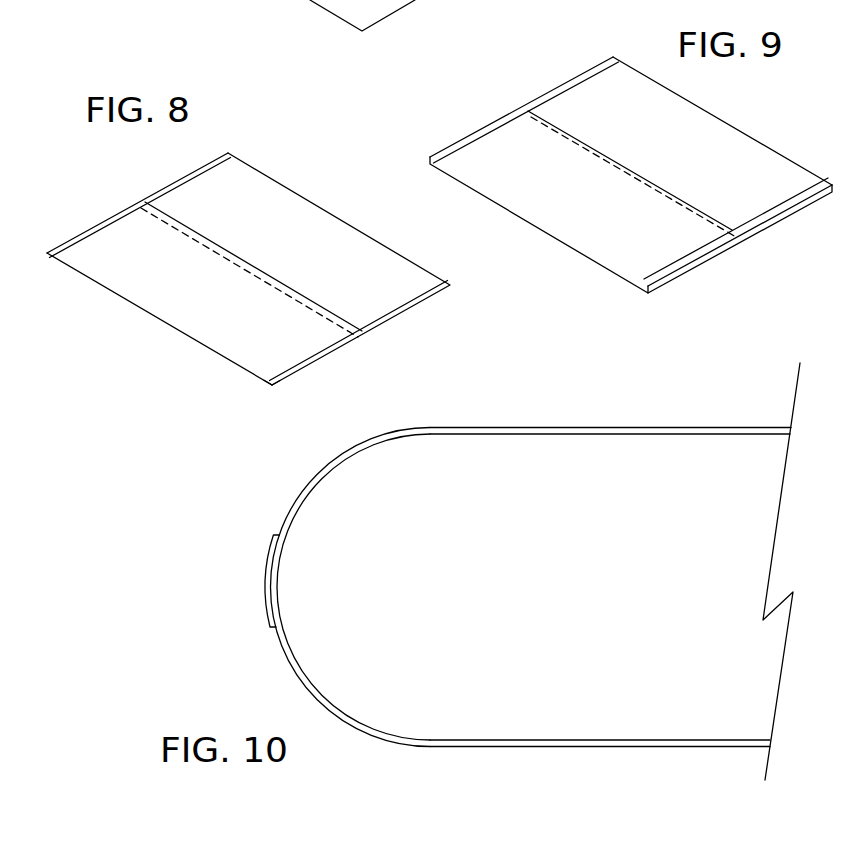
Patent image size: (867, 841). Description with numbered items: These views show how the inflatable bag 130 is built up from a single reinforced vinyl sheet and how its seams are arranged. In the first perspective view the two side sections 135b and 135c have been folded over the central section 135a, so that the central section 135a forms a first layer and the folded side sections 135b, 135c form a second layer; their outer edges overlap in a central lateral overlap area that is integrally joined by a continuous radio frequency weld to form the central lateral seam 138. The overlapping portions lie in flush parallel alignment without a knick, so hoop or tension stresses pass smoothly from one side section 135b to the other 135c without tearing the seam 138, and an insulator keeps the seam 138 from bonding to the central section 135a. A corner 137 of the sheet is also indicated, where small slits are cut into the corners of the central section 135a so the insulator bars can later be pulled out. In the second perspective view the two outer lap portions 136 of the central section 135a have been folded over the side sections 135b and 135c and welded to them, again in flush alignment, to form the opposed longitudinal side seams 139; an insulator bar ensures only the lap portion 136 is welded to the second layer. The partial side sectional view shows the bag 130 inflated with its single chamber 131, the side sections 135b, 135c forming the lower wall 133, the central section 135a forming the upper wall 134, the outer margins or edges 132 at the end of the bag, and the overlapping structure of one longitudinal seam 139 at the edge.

In FIG. 9, the inflatable bag 130 is at (462, 120).
In FIG. 10, the inflatable bag 130 is at (634, 405).
In FIG. 10, the chamber 131 is at (597, 598).
In FIG. 10, the outer margins or edges 132 is at (292, 517).
In FIG. 10, the lower wall 133 is at (690, 748).
In FIG. 10, the upper wall 134 is at (692, 430).
In FIG. 8, the central section 135a is at (158, 189).
In FIG. 10, the central section 135a is at (568, 432).
In FIG. 8, the side section 135b is at (183, 308).
In FIG. 9, the side section 135b is at (577, 213).
In FIG. 10, the side section 135b is at (540, 748).
In FIG. 8, the side section 135c is at (313, 222).
In FIG. 9, the side section 135c is at (745, 162).
In FIG. 8, the outer lap portion 136 is at (80, 231).
In FIG. 8, the corner of the sheet 137 is at (276, 388).
In FIG. 8, the central lateral seam 138 is at (311, 305).
In FIG. 9, the central lateral seam 138 is at (672, 196).
In FIG. 9, the side seam 139 is at (573, 82).
In FIG. 10, the side seam 139 is at (275, 603).